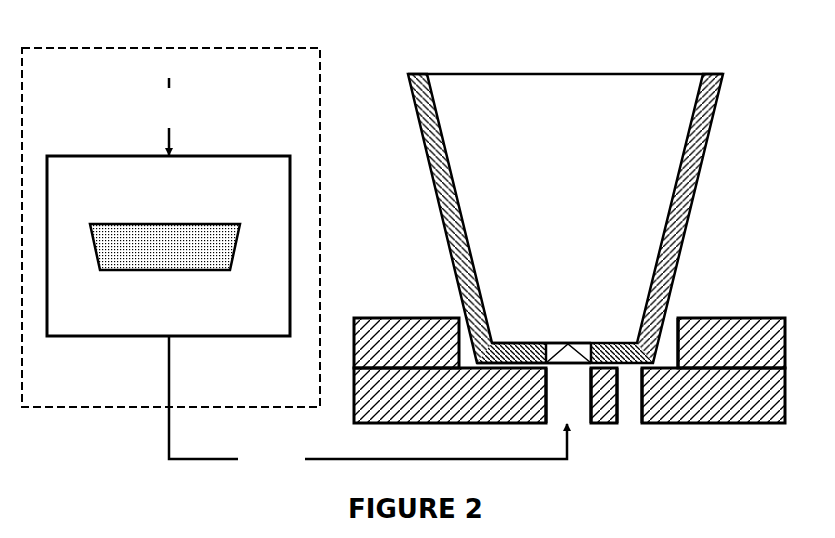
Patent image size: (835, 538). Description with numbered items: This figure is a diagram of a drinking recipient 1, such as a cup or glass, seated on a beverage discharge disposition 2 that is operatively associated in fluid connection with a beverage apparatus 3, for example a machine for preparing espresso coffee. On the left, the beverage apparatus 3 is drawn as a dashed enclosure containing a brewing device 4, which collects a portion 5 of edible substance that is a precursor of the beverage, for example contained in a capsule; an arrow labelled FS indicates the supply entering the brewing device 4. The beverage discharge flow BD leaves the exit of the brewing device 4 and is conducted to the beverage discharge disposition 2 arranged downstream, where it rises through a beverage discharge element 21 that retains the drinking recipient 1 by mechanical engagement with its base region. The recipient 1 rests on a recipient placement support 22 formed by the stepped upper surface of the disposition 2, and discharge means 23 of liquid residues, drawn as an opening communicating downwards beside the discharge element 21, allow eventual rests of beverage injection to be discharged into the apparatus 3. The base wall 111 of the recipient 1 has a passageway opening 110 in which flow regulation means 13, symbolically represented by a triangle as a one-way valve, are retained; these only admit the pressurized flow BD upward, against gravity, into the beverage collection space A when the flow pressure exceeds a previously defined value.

The drinking recipient 1 is at (565, 204).
The beverage discharge disposition 2 is at (569, 356).
The beverage apparatus 3 is at (171, 212).
The brewing device 4 is at (168, 230).
The portion of edible substance 5 is at (165, 231).
The flow regulation means 13 is at (575, 335).
The beverage discharge element 21 is at (583, 428).
The recipient placement support 22 is at (660, 360).
The discharge means of liquid residues 23 is at (630, 428).
The passageway opening 110 is at (550, 336).
The base wall 111 is at (520, 336).
The beverage collection space A is at (567, 206).
The feed stream FS is at (167, 116).
The beverage discharge flow BD is at (368, 403).